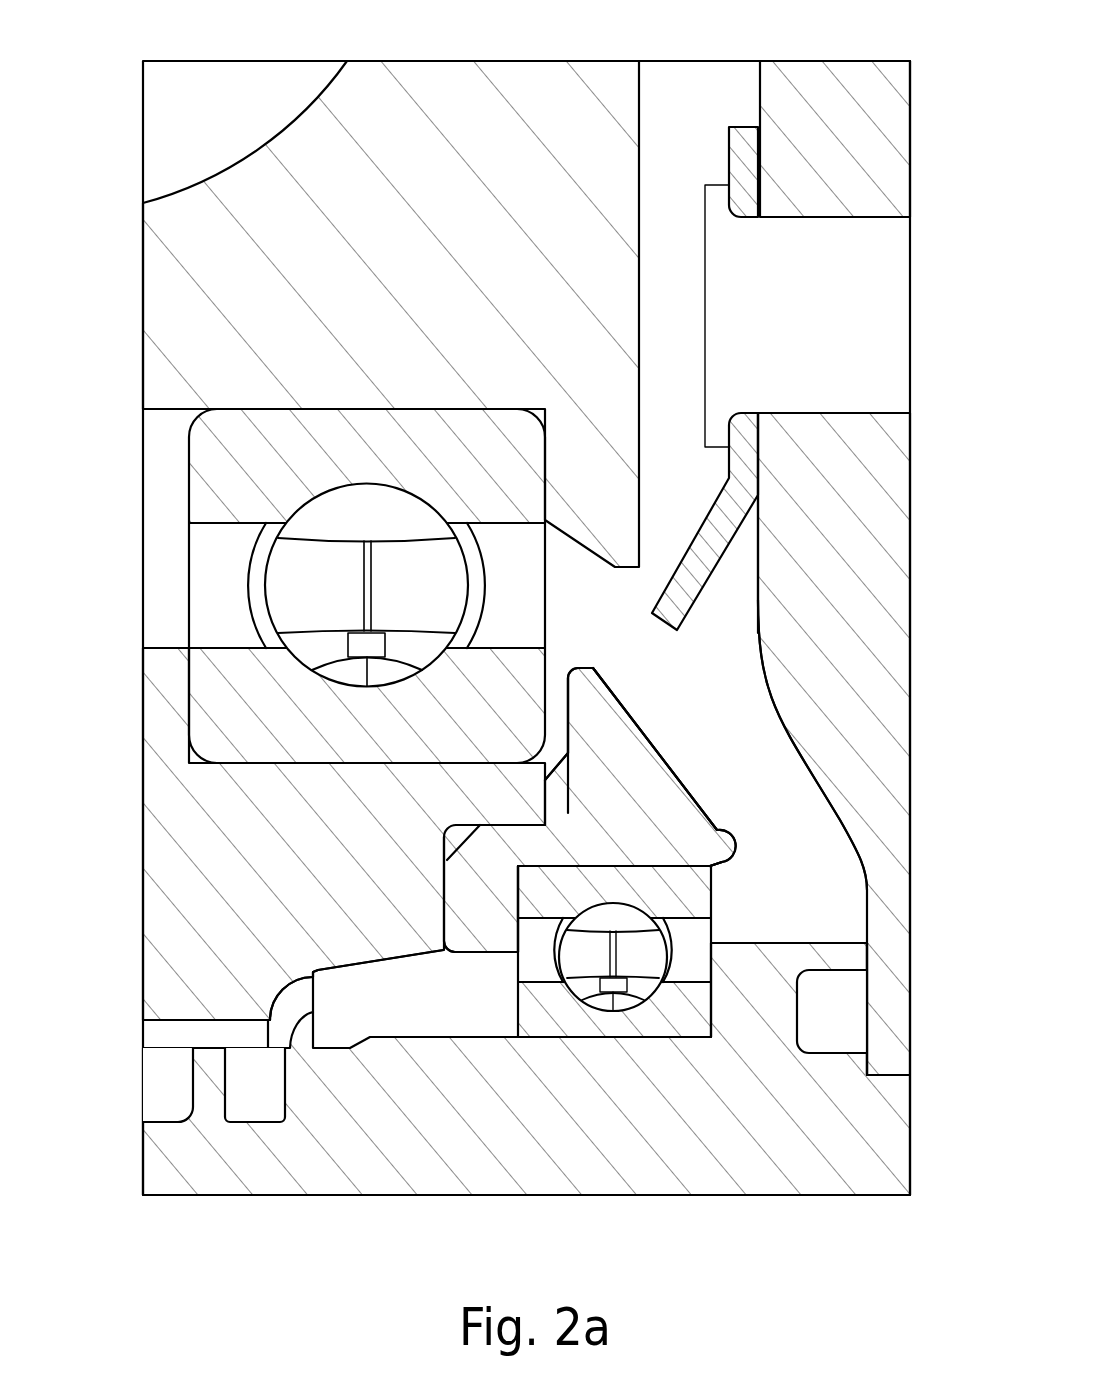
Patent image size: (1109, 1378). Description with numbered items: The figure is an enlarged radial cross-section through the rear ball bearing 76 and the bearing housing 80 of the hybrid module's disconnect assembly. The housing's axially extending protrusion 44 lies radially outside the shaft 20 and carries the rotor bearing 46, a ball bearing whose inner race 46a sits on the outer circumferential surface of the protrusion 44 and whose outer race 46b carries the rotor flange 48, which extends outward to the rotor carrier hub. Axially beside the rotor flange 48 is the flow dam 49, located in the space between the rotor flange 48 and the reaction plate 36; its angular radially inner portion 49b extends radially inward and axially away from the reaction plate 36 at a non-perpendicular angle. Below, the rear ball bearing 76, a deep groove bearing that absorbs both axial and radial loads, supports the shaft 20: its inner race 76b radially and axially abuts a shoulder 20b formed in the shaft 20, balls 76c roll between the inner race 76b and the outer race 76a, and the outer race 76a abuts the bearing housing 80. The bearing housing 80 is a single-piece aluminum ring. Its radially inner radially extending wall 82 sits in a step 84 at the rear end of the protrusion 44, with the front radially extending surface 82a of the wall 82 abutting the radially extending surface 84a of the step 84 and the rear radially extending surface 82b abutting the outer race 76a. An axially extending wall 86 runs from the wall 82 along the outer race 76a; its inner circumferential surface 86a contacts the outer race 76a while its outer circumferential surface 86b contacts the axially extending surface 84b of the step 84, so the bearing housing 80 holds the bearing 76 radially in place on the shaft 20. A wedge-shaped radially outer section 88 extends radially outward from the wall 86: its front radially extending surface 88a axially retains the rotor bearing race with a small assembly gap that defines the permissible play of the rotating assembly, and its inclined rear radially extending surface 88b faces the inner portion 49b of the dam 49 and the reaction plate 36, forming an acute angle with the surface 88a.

The shaft 20 is at (383, 1063).
The shoulder 20b is at (762, 1035).
The reaction plate 36 is at (847, 834).
The axially extending protrusion 44 is at (228, 908).
The rotor bearing 46 is at (308, 529).
The inner race 46a is at (245, 423).
The outer race 46b is at (277, 713).
The rotor flange 48 is at (446, 267).
The flow dam 49 is at (728, 112).
The radially inner portion 49b is at (708, 545).
The rear ball bearing 76 is at (749, 1059).
The outer race 76a is at (680, 893).
The inner race 76b is at (675, 1007).
The balls 76c is at (618, 920).
The bearing housing 80 is at (748, 815).
The radially inner radially extending wall 82 is at (497, 930).
The front radially extending surface 82a is at (443, 903).
The rear radially extending surface 82b is at (518, 935).
The step 84 is at (400, 827).
The radially extending surface 84a is at (447, 890).
The axially extending surface 84b is at (480, 825).
The axially extending wall 86 is at (553, 838).
The inner circumferential surface 86a is at (675, 868).
The outer circumferential surface 86b is at (523, 823).
The radially outer section 88 is at (657, 803).
The front radially extending surface 88a is at (567, 752).
The rear radially extending surface 88b is at (650, 740).